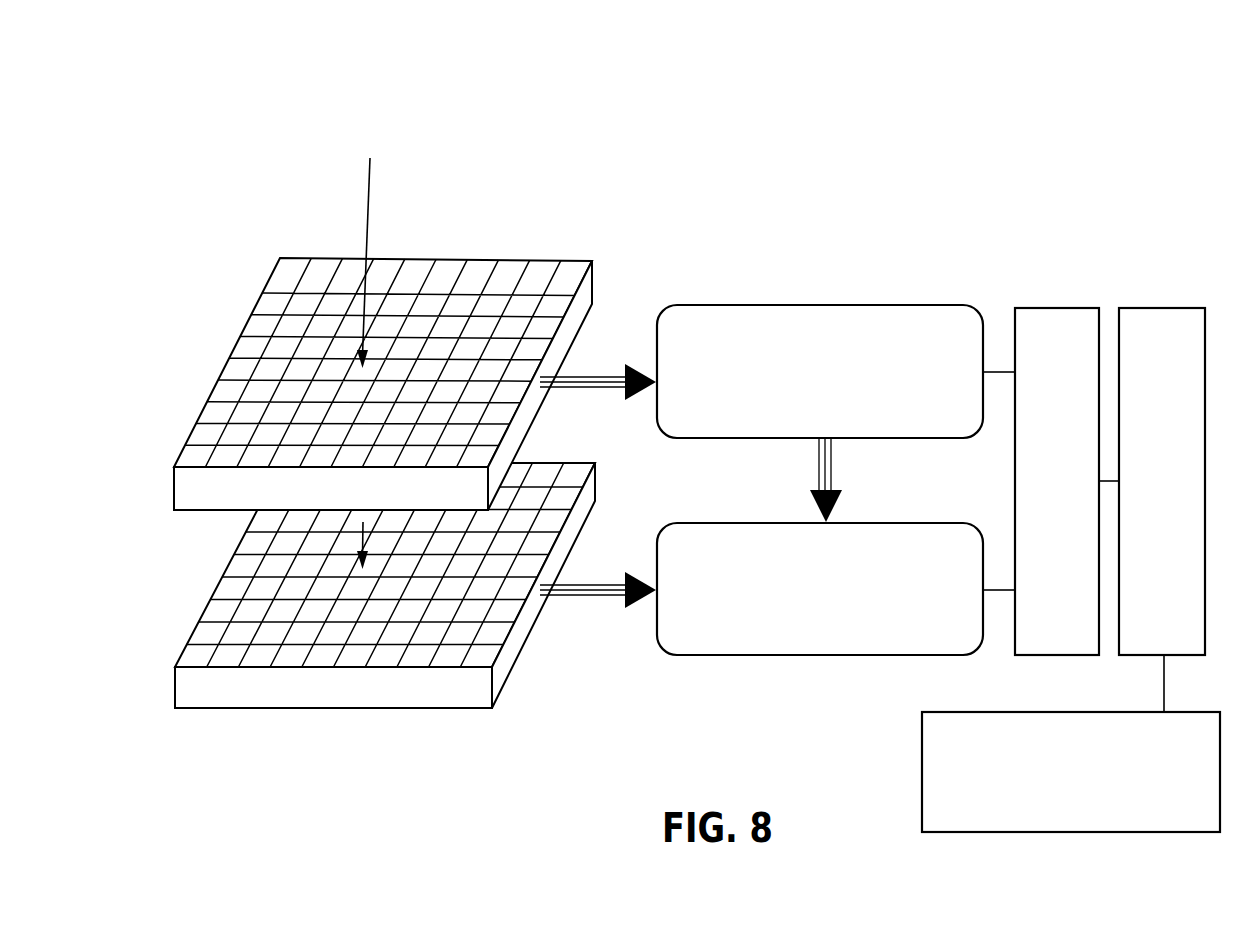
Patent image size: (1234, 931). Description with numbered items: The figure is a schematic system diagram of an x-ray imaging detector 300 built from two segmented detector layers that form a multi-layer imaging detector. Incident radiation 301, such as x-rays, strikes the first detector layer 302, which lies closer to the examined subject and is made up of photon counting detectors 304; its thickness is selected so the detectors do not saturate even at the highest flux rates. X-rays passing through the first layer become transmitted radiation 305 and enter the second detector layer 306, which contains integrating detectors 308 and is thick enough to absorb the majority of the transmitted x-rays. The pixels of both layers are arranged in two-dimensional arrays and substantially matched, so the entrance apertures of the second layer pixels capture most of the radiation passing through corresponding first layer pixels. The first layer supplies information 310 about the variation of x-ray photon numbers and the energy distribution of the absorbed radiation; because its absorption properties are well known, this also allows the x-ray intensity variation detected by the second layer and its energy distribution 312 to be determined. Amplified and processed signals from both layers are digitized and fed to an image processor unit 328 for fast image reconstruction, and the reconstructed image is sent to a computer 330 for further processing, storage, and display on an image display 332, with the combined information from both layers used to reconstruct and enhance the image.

The x-ray imaging detector 300 is at (845, 207).
The incident radiation 301 is at (367, 183).
The first detector layer 302 is at (538, 258).
The photon counting detectors 304 is at (280, 275).
The transmitted radiation 305 is at (230, 555).
The second detector layer 306 is at (503, 657).
The integrating detectors 308 is at (572, 472).
The first layer information 310 is at (915, 305).
The second layer energy distribution information 312 is at (897, 523).
The image processor unit 328 is at (1049, 308).
The computer 330 is at (1151, 308).
The image display 332 is at (922, 735).